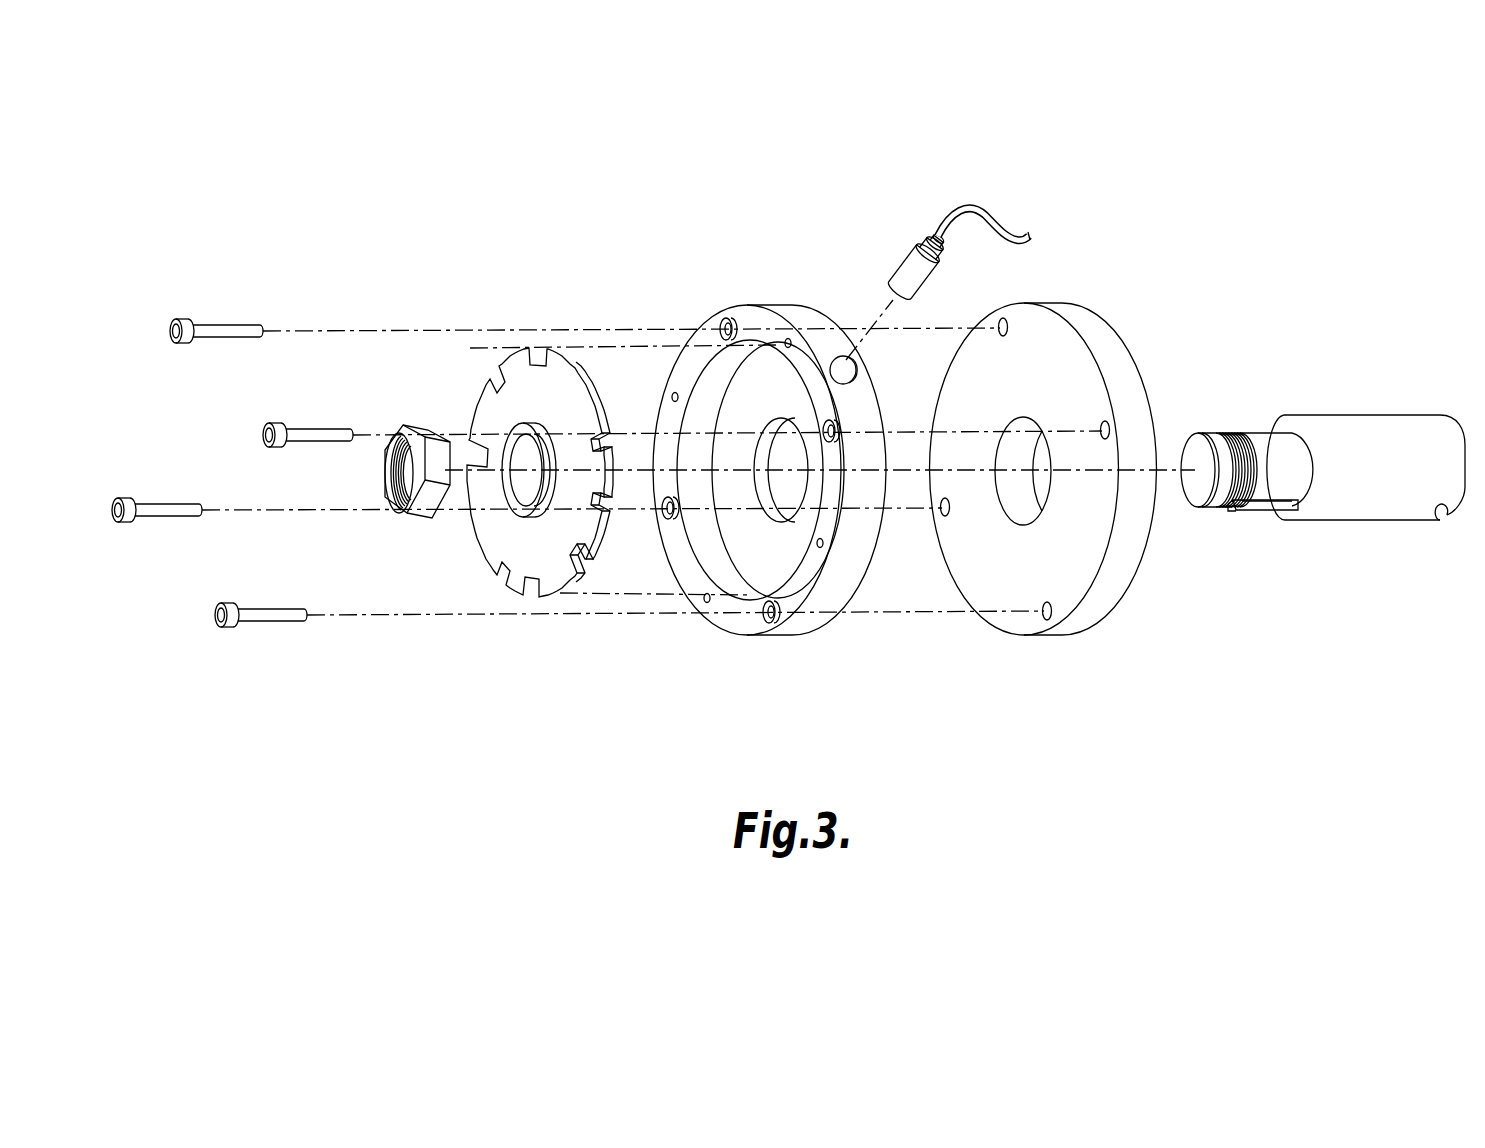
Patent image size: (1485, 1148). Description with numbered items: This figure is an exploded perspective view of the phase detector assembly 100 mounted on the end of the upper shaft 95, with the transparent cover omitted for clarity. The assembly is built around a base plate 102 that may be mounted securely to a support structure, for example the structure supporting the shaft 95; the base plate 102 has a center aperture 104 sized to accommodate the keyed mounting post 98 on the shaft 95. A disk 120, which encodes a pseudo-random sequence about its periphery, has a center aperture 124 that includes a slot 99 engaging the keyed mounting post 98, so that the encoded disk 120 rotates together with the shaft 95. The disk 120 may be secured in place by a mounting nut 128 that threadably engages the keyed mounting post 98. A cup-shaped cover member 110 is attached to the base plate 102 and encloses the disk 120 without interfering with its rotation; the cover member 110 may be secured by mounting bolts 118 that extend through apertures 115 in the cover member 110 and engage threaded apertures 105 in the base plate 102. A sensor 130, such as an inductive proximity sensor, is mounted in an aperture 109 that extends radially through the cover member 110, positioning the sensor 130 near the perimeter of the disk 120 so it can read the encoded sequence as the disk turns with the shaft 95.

The upper shaft 95 is at (1323, 450).
The keyed mounting post 98 is at (1258, 512).
The slot 99 is at (530, 512).
The phase detector assembly 100 is at (566, 259).
The base plate 102 is at (1046, 491).
The center aperture 104 is at (1022, 503).
The threaded apertures 105 is at (1000, 320).
The aperture 109 is at (840, 362).
The cover member 110 is at (754, 477).
The apertures 115 is at (720, 320).
The mounting bolts 118 is at (218, 333).
The disk 120 is at (485, 422).
The center aperture 124 is at (489, 509).
The mounting nut 128 is at (407, 510).
The sensor 130 is at (909, 258).